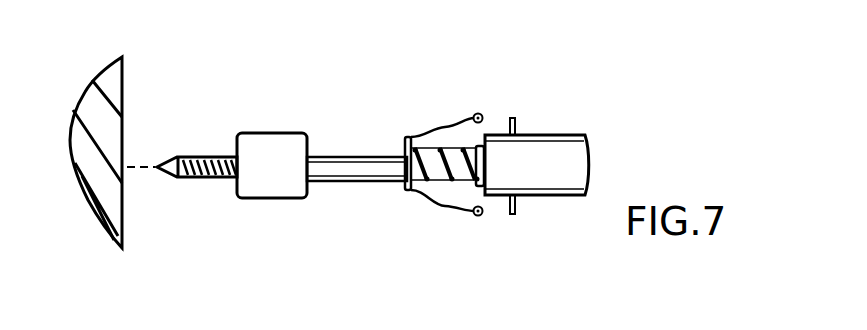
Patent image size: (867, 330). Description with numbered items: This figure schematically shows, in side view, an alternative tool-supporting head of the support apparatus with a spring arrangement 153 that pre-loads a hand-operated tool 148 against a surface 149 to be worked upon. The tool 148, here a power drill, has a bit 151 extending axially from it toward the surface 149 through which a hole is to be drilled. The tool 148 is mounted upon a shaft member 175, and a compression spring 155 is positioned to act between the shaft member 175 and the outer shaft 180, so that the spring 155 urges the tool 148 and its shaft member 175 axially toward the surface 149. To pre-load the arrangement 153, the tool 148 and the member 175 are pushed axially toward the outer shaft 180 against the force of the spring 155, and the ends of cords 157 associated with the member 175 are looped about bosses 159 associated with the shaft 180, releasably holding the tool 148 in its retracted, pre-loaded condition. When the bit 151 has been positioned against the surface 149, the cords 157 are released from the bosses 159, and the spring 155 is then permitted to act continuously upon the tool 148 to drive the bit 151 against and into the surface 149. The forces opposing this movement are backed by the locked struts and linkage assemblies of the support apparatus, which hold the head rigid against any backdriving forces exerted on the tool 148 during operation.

The tool 148 is at (248, 200).
The surface 149 is at (123, 200).
The bit 151 is at (198, 155).
The spring arrangement 153 is at (467, 168).
The compression spring 155 is at (453, 188).
The cords 157 is at (452, 117).
The bosses 159 is at (514, 120).
The shaft member 175 is at (337, 157).
The shaft 180 is at (585, 134).